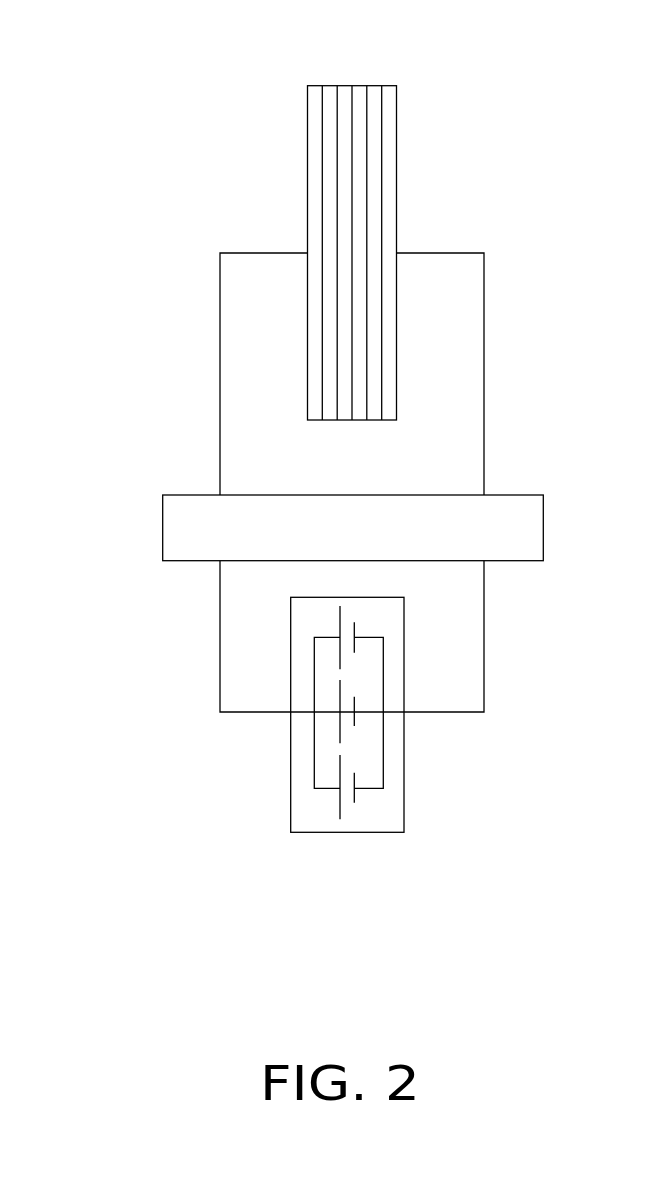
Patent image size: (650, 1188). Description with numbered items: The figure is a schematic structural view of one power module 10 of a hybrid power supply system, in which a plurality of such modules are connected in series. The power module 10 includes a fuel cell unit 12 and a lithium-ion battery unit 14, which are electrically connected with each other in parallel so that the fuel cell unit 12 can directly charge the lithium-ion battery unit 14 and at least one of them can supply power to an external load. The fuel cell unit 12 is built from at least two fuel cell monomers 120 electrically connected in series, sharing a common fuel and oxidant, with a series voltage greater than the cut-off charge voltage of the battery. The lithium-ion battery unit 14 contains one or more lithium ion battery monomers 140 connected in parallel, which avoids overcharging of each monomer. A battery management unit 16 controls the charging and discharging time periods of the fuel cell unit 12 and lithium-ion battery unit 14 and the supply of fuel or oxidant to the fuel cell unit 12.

The power module 10 is at (189, 59).
The fuel cell unit 12 is at (360, 92).
The fuel cell monomers 120 is at (388, 165).
The battery management unit 16 is at (513, 519).
The lithium-ion battery unit 14 is at (405, 777).
The lithium ion battery monomer 140 is at (340, 810).